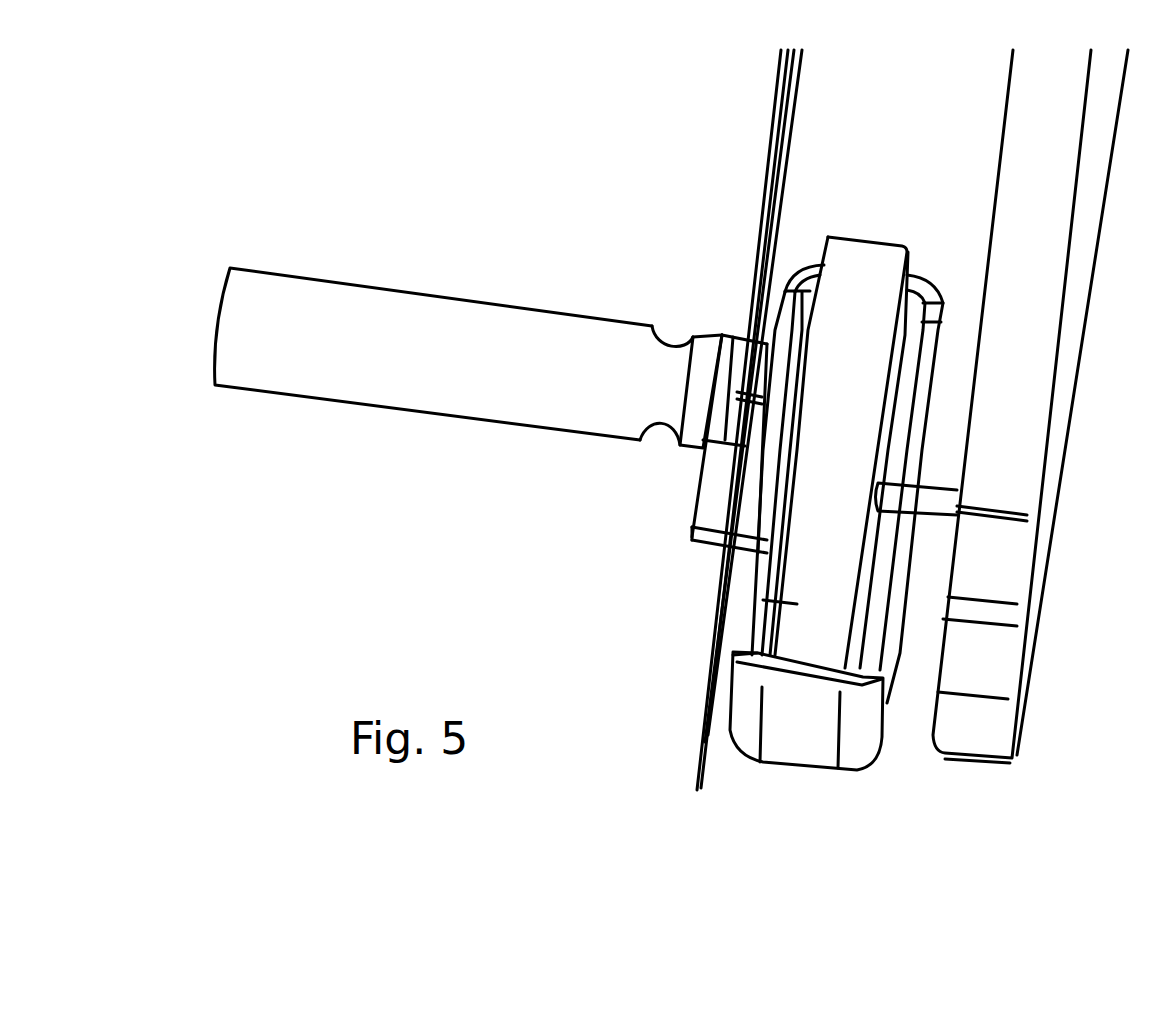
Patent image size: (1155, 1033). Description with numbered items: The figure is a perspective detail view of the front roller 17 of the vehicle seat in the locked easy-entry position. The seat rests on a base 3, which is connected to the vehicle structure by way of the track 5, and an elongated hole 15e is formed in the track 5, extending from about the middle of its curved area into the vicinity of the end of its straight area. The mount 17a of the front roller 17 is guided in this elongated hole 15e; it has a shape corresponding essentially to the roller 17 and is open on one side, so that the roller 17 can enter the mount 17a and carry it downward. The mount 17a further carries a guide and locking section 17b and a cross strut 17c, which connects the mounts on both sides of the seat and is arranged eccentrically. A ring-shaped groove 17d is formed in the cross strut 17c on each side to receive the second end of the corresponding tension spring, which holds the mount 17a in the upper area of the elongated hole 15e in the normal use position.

The base 3 is at (1066, 357).
The track 5 is at (778, 60).
The elongated hole 15e is at (773, 153).
The front roller 17 is at (853, 288).
The mount 17a is at (783, 745).
The guide and locking section 17b is at (713, 497).
The cross strut 17c is at (405, 380).
The ring-shaped groove 17d is at (677, 335).